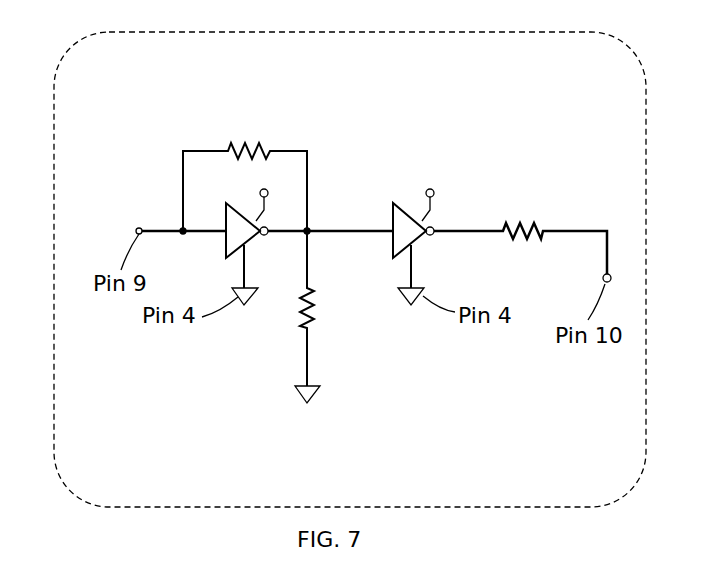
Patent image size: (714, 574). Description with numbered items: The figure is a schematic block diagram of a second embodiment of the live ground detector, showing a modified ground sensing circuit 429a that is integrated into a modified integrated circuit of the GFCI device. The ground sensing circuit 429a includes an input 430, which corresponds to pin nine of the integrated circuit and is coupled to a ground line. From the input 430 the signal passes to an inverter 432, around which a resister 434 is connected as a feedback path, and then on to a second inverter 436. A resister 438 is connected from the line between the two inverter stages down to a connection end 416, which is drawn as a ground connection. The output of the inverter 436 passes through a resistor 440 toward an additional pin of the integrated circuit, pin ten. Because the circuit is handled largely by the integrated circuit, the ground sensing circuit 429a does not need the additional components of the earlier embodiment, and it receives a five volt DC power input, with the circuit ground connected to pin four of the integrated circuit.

The ground sensing circuit 429a is at (133, 32).
The input 430 is at (139, 228).
The inverter 432 is at (226, 238).
The resister 434 is at (245, 148).
The inverter 436 is at (393, 212).
The resister 438 is at (312, 304).
The resistor 440 is at (522, 226).
The connection end 416 is at (317, 391).